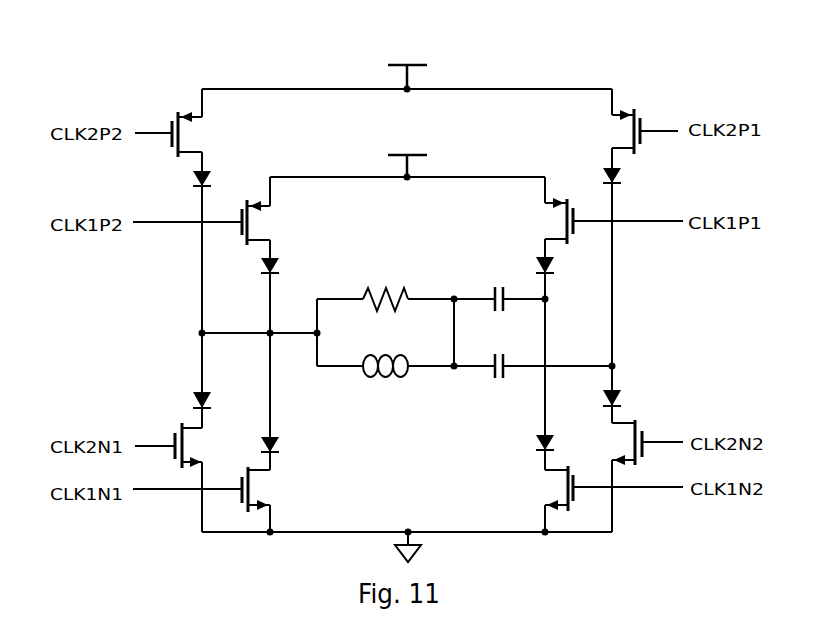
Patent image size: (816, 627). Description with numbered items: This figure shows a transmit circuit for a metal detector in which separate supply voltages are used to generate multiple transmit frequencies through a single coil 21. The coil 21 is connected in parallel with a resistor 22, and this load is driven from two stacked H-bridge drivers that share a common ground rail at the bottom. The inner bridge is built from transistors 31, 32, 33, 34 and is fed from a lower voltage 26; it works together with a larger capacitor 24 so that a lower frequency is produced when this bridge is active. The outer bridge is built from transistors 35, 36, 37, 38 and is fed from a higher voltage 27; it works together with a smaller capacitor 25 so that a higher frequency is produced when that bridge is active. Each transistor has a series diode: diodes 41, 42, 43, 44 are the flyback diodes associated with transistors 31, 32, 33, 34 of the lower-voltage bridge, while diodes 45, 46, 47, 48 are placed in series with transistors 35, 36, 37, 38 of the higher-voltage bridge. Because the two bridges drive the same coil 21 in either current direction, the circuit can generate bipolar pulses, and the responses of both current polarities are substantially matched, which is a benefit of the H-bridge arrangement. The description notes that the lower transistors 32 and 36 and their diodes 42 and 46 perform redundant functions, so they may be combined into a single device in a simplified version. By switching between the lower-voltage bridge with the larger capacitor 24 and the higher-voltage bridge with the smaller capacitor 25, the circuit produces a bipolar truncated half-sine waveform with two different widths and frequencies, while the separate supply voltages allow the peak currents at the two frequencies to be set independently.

The coil 21 is at (385, 352).
The resistor 22 is at (385, 285).
The capacitor 24 is at (490, 292).
The capacitor 25 is at (487, 372).
The lower voltage 26 is at (430, 141).
The higher voltage 27 is at (430, 52).
The transistor 31 is at (270, 222).
The transistor 32 is at (270, 488).
The transistor 33 is at (543, 221).
The transistor 34 is at (545, 487).
The transistor 35 is at (200, 133).
The transistor 36 is at (202, 447).
The transistor 37 is at (612, 130).
The transistor 38 is at (612, 442).
The flyback diode 41 is at (257, 267).
The flyback diode 42 is at (284, 446).
The flyback diode 43 is at (562, 266).
The flyback diode 44 is at (530, 442).
The diode 45 is at (190, 183).
The diode 46 is at (190, 405).
The diode 47 is at (625, 177).
The diode 48 is at (628, 397).